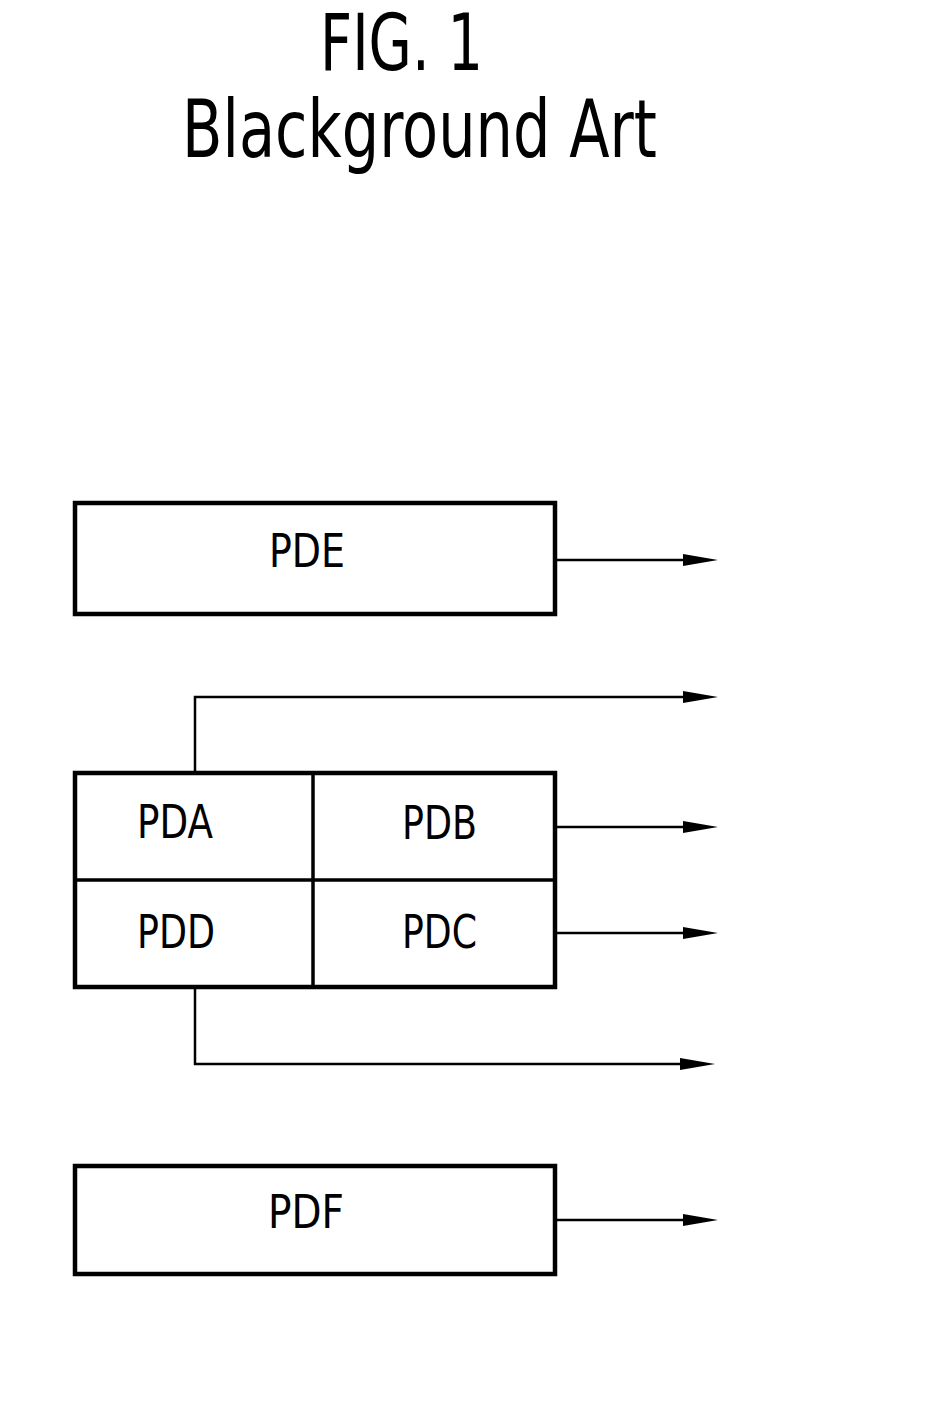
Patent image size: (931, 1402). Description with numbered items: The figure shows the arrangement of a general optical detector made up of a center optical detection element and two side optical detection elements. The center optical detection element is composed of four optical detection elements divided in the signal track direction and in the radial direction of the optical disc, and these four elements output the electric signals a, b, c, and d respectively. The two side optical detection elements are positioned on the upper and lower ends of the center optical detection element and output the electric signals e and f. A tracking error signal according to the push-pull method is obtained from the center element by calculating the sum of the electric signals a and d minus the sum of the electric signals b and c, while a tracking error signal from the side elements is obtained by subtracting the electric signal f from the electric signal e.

The electric signal a is at (483, 716).
The electric signal b is at (664, 832).
The electric signal c is at (662, 930).
The electric signal d is at (484, 1041).
The electric signal e is at (663, 549).
The electric signal f is at (658, 1222).